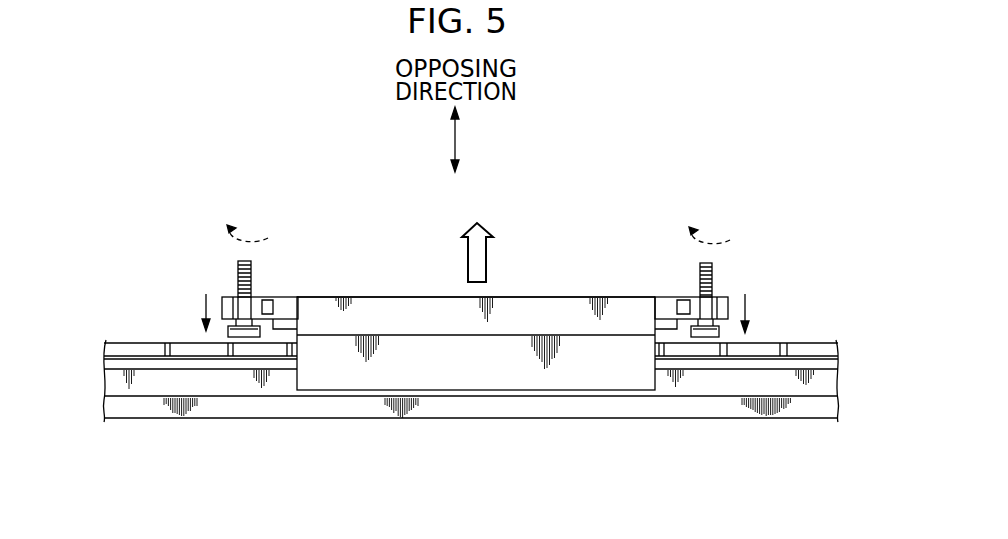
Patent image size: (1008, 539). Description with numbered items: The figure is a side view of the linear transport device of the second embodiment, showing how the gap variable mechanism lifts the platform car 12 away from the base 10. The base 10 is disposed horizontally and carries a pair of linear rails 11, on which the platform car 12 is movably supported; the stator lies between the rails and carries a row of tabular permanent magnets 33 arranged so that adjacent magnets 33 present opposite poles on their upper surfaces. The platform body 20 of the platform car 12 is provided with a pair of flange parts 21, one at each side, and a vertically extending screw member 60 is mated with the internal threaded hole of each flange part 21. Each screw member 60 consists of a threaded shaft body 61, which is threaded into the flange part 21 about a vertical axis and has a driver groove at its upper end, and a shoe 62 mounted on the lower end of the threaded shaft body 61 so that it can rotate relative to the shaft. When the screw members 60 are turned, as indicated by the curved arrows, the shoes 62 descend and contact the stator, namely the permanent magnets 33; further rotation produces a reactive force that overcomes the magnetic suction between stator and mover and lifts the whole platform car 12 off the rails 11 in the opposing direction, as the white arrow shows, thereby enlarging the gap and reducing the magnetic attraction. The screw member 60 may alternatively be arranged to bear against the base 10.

The base 10 is at (792, 413).
The linear rail 11 is at (750, 382).
The platform car 12 is at (522, 295).
The platform body 20 is at (410, 313).
The flange part 21 is at (263, 297).
The permanent magnet 33 is at (177, 343).
The screw member 60 is at (262, 262).
The threaded shaft body 61 is at (252, 279).
The shoe 62 is at (248, 337).